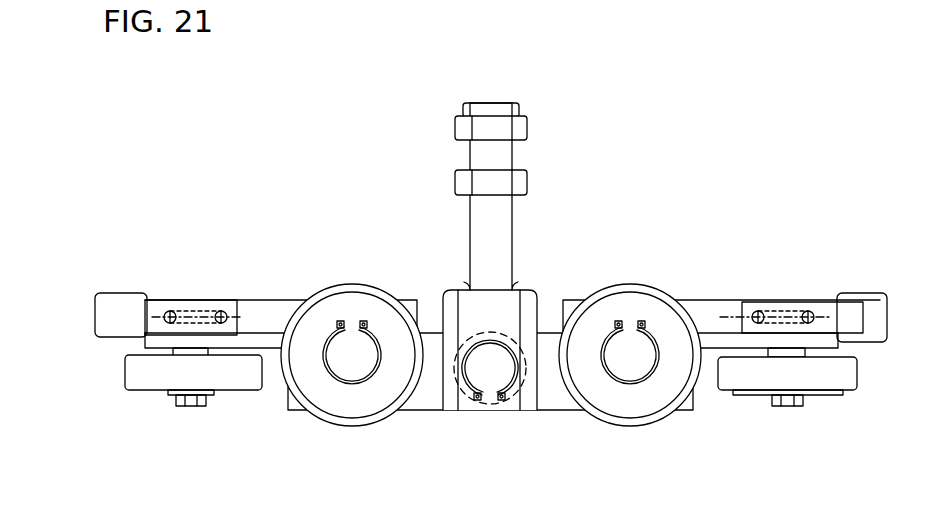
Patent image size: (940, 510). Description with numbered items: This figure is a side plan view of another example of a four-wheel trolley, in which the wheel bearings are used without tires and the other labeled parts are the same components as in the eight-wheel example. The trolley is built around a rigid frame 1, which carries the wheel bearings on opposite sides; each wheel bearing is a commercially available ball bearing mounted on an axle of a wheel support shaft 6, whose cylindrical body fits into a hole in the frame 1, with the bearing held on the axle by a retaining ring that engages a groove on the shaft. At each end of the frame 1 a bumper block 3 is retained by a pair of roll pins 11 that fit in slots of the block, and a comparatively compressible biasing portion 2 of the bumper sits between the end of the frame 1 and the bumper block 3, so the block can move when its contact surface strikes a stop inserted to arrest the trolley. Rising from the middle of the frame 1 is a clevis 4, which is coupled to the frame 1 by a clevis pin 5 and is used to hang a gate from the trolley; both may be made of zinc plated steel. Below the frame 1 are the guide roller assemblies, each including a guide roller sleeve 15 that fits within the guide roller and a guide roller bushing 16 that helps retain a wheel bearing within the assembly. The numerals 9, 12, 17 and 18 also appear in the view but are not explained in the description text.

The frame 1 is at (697, 312).
The biasing portion 2 is at (878, 297).
The bumper block 3 is at (835, 312).
The clevis 4 is at (497, 226).
The clevis pin 5 is at (480, 352).
The wheel support shaft 6 is at (340, 338).
The nut 9 is at (193, 399).
The roll pin 11 is at (762, 318).
The snap ring ears 12 is at (508, 398).
The guide roller sleeve 15 is at (798, 353).
The guide roller bushing 16 is at (205, 393).
The nut 17 is at (490, 185).
The nut 18 is at (497, 123).